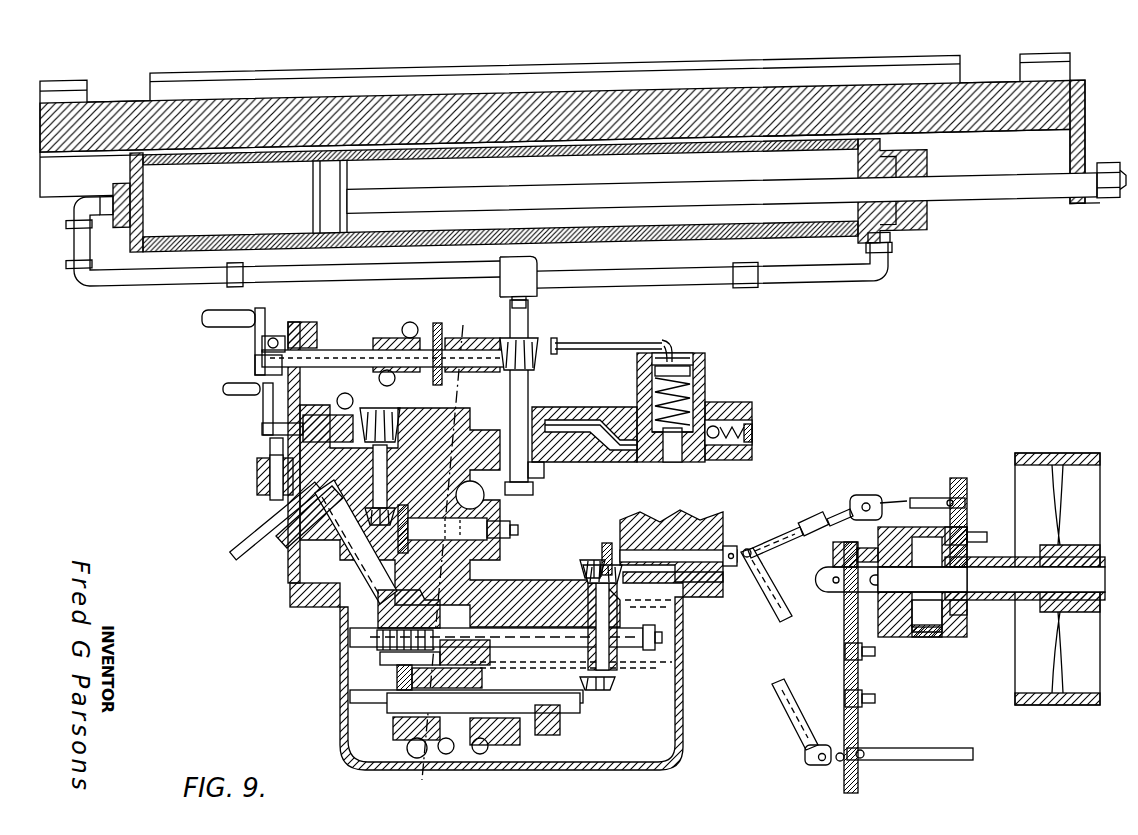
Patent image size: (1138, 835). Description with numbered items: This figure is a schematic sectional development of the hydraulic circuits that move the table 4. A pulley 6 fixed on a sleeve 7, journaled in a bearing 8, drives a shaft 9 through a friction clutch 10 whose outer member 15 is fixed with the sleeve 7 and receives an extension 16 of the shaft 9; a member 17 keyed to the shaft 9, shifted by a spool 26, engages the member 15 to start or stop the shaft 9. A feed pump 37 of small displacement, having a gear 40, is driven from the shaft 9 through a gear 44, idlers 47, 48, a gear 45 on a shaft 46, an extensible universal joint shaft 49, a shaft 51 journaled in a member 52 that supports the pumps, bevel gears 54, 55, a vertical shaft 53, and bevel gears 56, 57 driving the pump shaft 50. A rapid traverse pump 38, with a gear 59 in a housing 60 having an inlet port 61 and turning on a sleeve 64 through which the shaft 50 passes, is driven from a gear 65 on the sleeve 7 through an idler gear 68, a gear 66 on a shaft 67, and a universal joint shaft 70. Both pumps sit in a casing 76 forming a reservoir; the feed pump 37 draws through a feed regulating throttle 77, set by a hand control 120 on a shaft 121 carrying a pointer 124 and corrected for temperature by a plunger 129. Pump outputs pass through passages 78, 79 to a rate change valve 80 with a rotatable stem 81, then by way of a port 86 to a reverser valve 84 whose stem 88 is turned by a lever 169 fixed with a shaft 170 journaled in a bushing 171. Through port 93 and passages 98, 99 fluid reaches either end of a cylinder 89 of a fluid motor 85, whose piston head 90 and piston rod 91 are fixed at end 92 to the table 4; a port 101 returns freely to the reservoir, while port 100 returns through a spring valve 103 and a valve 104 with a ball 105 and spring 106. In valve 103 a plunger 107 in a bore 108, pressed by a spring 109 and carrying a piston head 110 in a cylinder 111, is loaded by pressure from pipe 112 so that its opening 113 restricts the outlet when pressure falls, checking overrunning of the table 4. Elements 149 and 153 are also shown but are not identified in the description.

The table 4 is at (601, 86).
The pulley 6 is at (1037, 456).
The sleeve 7 is at (1000, 567).
The bearing 8 is at (460, 319).
The shaft 9 is at (820, 572).
The friction clutch 10 is at (935, 642).
The outer member 15 is at (945, 642).
The extension 16 is at (1000, 602).
The member 17 is at (905, 626).
The spool 26 is at (890, 548).
The feed pump 37 is at (395, 730).
The rapid traverse pump 38 is at (560, 720).
The gear 40 is at (400, 680).
The gear 44 is at (855, 548).
The gear 45 is at (862, 745).
The shaft 46 is at (915, 760).
The idler 47 is at (844, 632).
The idler 48 is at (845, 702).
The extensible universal joint shaft 49 is at (768, 610).
The pump shaft 50 is at (400, 702).
The shaft 51 is at (640, 550).
The member 52 is at (530, 570).
The vertical shaft 53 is at (590, 580).
The bevel gear 54 is at (608, 542).
The bevel gear 55 is at (590, 560).
The bevel gear 56 is at (606, 683).
The bevel gear 57 is at (592, 705).
The gear 59 is at (530, 763).
The housing 60 is at (520, 740).
The inlet port 61 is at (465, 643).
The sleeve 64 is at (428, 748).
The gear 65 is at (958, 624).
The gear 66 is at (958, 478).
The shaft 67 is at (920, 498).
The idler gear 68 is at (966, 530).
The extensible universal joint shaft 70 is at (785, 530).
The housing or casing 76 is at (668, 766).
The feed regulating throttle 77 is at (378, 640).
The passage 78 is at (400, 552).
The passage 79 is at (482, 512).
The rate change valve 80 is at (500, 538).
The rotatable stem 81 is at (447, 527).
The reverser valve 84 is at (532, 410).
The fluid motor 85 is at (643, 261).
The port 86 is at (470, 482).
The rotatable stem 88 is at (530, 393).
The cylinder 89 is at (238, 243).
The piston head 90 is at (313, 192).
The piston rod 91 is at (437, 208).
The end 92 is at (1060, 213).
The port 93 is at (468, 404).
The passage 98 is at (338, 290).
The passage 99 is at (640, 297).
The port 100 is at (566, 464).
The port 101 is at (538, 472).
The spring valve 103 is at (708, 358).
The valve 104 is at (750, 420).
The ball 105 is at (720, 465).
The spring 106 is at (744, 462).
The plunger 107 is at (663, 455).
The bore 108 is at (681, 455).
The spring 109 is at (712, 398).
The piston head 110 is at (677, 372).
The cylinder 111 is at (708, 372).
The pipe 112 is at (598, 343).
The opening 113 is at (675, 463).
The hand control 120 is at (233, 556).
The shaft 121 is at (285, 548).
The pointer 124 is at (305, 495).
The plunger 129 is at (385, 648).
The lever 149 is at (226, 397).
The shaft 153 is at (371, 490).
The lever 169 is at (202, 319).
The shaft 170 is at (360, 370).
The bushing 171 is at (358, 346).